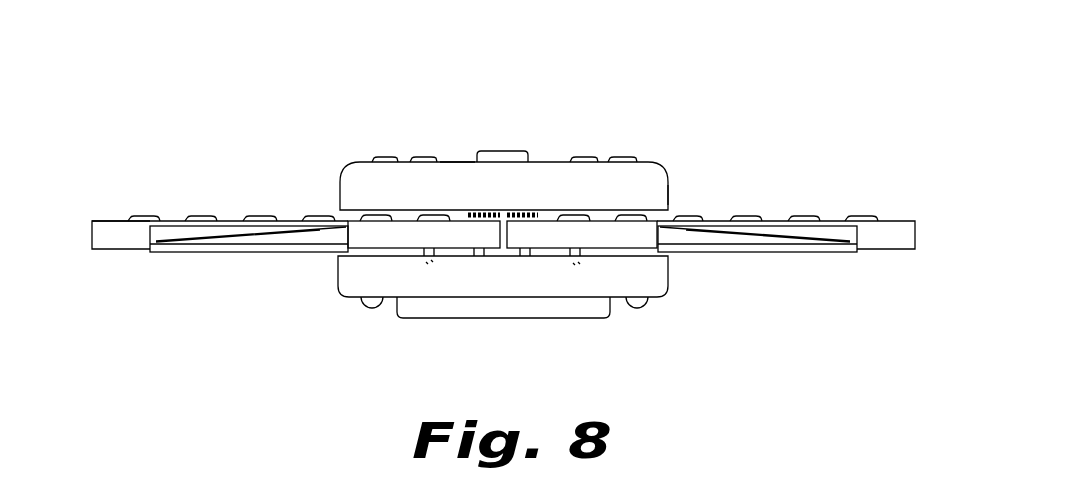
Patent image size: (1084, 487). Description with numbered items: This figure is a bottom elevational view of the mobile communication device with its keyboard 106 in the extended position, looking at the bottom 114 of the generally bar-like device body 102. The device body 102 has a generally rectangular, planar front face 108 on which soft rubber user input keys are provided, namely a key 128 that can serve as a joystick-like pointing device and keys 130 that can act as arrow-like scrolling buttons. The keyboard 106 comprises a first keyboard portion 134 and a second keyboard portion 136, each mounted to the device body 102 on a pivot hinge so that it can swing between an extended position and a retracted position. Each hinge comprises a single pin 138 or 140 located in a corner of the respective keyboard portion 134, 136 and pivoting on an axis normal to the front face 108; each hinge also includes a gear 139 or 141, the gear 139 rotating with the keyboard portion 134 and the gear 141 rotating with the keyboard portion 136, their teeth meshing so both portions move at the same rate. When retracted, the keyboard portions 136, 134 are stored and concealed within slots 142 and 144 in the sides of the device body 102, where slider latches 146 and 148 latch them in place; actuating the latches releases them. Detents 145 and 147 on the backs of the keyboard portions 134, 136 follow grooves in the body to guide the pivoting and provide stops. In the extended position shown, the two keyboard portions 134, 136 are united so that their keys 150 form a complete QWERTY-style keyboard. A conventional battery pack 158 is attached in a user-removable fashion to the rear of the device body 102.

The device body 102 is at (334, 165).
The keyboard 106 is at (114, 210).
The front face 108 is at (460, 162).
The bottom 114 is at (650, 190).
The user input key 128 is at (523, 152).
The user input keys 130 is at (427, 157).
The first keyboard portion 134 is at (888, 249).
The second keyboard portion 136 is at (108, 250).
The pin 138 is at (530, 256).
The gear 139 is at (523, 212).
The pin 140 is at (478, 256).
The gear 141 is at (472, 212).
The slot 142 is at (343, 247).
The slot 144 is at (693, 248).
The detent 145 is at (587, 256).
The slider latch 146 is at (217, 247).
The detent 147 is at (422, 256).
The slider latch 148 is at (792, 250).
The keys 150 is at (310, 214).
The battery pack 158 is at (493, 318).